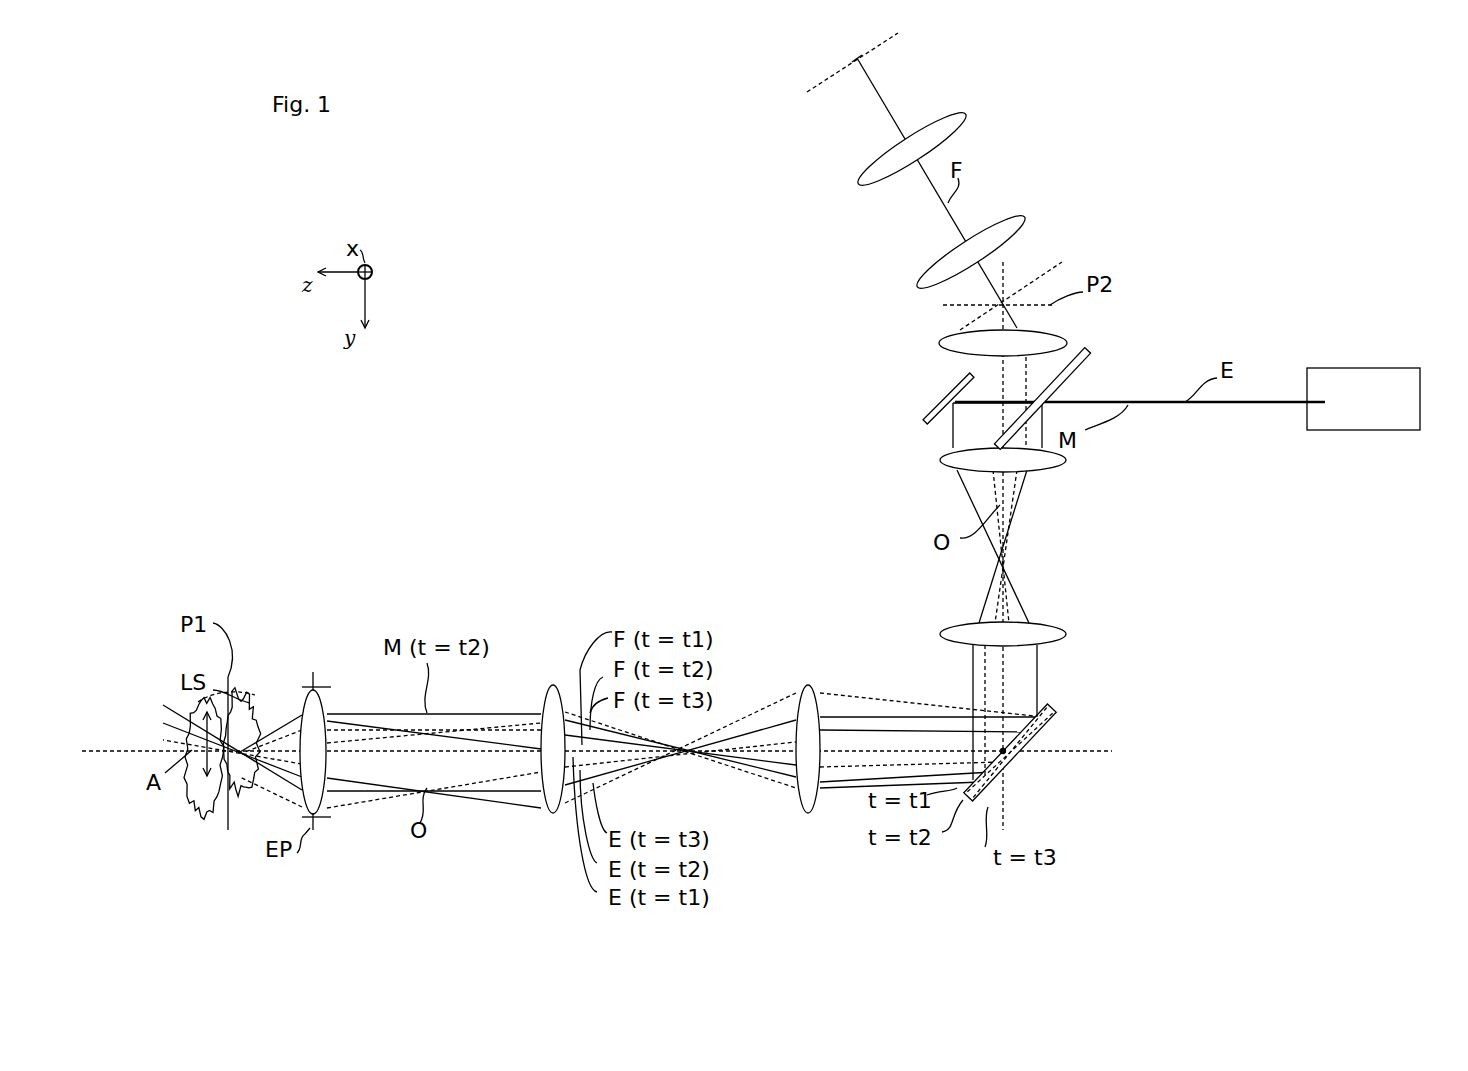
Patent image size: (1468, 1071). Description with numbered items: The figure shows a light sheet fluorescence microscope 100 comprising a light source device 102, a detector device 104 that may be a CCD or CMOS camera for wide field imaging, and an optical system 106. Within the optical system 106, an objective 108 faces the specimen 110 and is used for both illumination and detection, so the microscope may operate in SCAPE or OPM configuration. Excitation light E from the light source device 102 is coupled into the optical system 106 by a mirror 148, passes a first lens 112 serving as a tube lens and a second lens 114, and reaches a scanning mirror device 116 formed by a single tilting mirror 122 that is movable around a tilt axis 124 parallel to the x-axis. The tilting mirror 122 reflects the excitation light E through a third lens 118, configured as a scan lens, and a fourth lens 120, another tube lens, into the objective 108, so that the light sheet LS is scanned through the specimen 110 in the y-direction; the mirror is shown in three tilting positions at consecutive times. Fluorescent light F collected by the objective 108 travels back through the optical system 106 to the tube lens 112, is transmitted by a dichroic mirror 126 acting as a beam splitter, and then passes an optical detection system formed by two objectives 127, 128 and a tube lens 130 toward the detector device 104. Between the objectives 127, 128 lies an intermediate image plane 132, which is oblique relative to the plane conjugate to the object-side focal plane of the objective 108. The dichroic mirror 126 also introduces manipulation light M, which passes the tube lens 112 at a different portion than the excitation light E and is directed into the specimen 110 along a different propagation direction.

The light sheet fluorescence microscope 100 is at (1226, 45).
The light source device 102 is at (1405, 368).
The detector device 104 is at (807, 92).
The optical system 106 is at (1160, 548).
The objective 108 is at (336, 674).
The specimen 110 is at (207, 822).
The first lens 112 is at (1073, 462).
The second lens 114 is at (1067, 633).
The scanning mirror device 116 is at (1147, 743).
The third lens 118 is at (806, 685).
The fourth lens 120 is at (553, 685).
The tilting mirror 122 is at (1057, 712).
The tilt axis 124 is at (1017, 750).
The dichroic mirror 126 is at (1088, 350).
The objective 127 is at (937, 343).
The objective 128 is at (1025, 222).
The tube lens 130 is at (984, 104).
The intermediate image plane 132 is at (1062, 262).
The mirror 148 is at (925, 418).